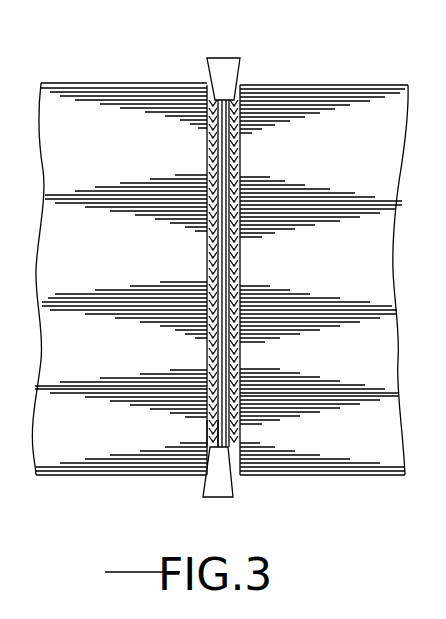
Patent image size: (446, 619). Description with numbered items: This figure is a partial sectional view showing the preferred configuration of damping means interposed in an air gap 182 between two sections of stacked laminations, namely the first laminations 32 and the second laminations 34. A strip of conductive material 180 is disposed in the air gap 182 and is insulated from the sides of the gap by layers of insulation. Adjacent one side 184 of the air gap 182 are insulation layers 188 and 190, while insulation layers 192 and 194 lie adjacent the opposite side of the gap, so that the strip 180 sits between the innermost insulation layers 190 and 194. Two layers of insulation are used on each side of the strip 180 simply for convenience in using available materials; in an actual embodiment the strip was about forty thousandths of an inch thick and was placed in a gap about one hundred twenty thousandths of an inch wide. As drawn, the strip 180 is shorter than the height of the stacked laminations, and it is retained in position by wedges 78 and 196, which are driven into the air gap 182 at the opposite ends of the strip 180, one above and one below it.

The first laminations 32 is at (361, 83).
The second laminations 34 is at (107, 82).
The wedge 78 is at (223, 65).
The strip of conductive material 180 is at (216, 170).
The air gap 182 is at (186, 246).
The side of air gap 184 is at (206, 134).
The insulation layer 188 is at (241, 152).
The insulation layer 190 is at (207, 420).
The insulation layer 192 is at (241, 350).
The insulation layer 194 is at (241, 428).
The wedge 196 is at (220, 483).